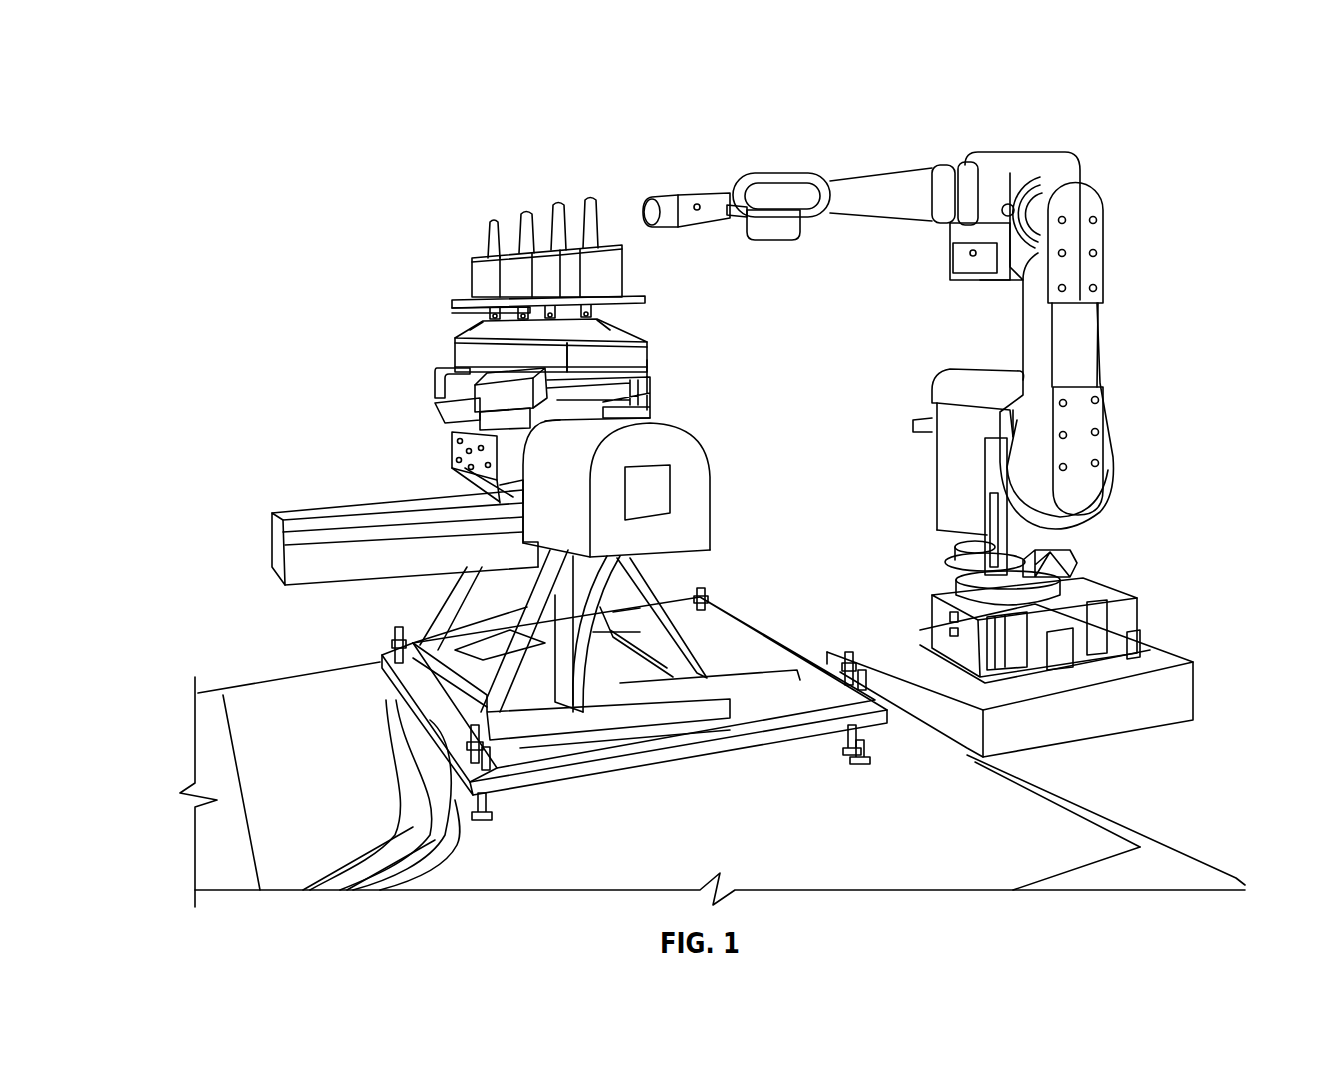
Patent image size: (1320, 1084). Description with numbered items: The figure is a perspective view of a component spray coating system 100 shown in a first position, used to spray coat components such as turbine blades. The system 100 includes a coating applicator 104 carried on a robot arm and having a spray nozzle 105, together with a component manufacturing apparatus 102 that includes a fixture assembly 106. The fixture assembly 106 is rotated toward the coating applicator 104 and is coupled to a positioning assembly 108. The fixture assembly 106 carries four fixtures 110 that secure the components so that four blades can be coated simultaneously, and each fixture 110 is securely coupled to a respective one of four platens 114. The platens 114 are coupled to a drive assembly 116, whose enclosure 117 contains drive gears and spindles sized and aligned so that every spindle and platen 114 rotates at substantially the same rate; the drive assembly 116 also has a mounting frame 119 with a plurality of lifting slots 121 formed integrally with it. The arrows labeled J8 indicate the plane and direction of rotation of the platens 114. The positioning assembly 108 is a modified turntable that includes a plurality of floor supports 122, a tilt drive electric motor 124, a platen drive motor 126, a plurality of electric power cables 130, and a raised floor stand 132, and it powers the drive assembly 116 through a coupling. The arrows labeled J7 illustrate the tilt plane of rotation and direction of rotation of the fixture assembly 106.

The component spray coating system 100 is at (247, 82).
The component manufacturing apparatus 102 is at (567, 195).
The coating applicator 104 is at (950, 386).
The spray nozzle 105 is at (687, 193).
The fixture assembly 106 is at (623, 264).
The positioning assembly 108 is at (657, 593).
The fixtures 110 is at (537, 272).
The platens 114 is at (490, 310).
The drive assembly 116 is at (463, 347).
The enclosure 117 is at (647, 360).
The mounting frame 119 is at (453, 448).
The lifting slots 121 is at (457, 390).
The floor supports 122 is at (477, 690).
The tilt drive electric motor 124 is at (698, 488).
The platen drive motor 126 is at (330, 573).
The electric power cables 130 is at (437, 848).
The raised floor stand 132 is at (707, 748).
The tilt plane of rotation arrows J7 is at (663, 456).
The platen plane of rotation arrows J8 is at (600, 360).